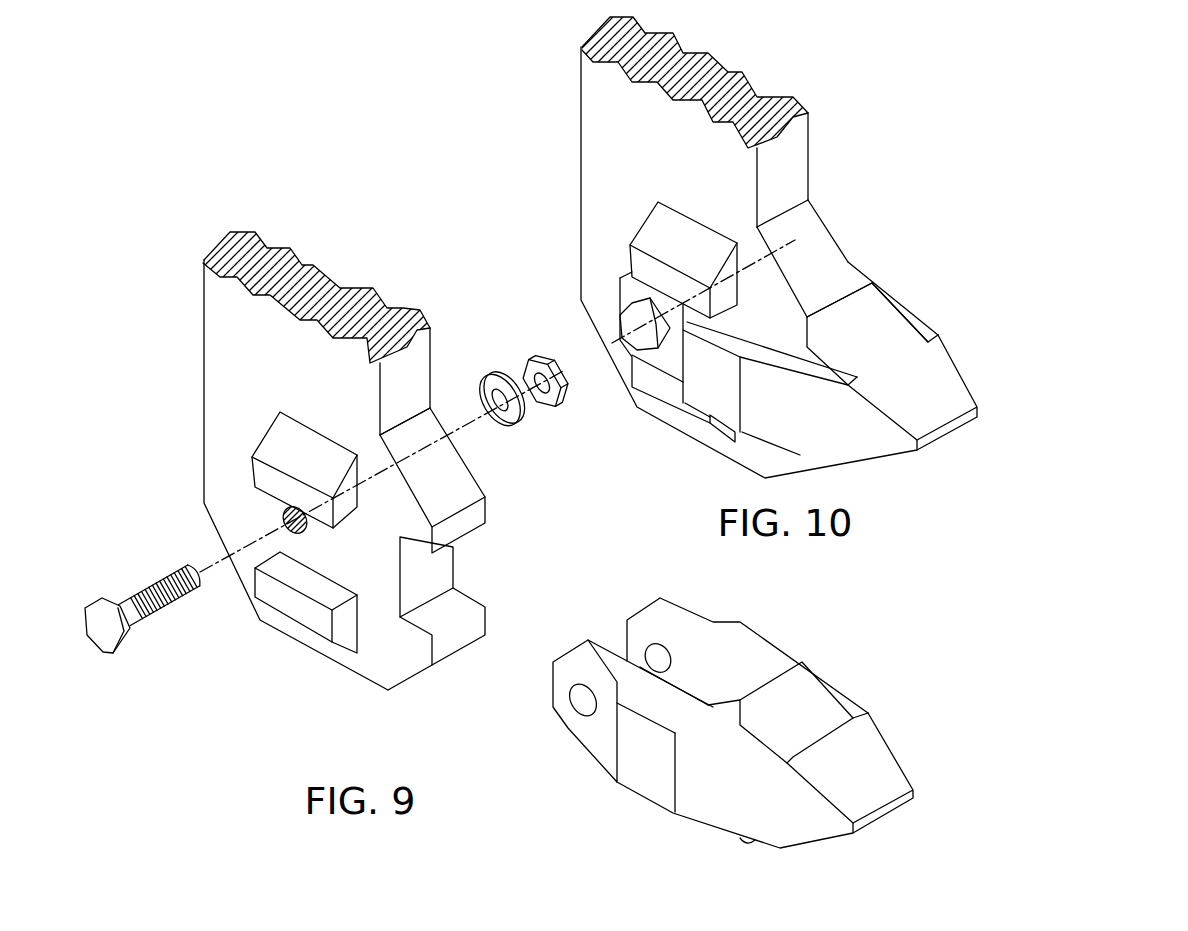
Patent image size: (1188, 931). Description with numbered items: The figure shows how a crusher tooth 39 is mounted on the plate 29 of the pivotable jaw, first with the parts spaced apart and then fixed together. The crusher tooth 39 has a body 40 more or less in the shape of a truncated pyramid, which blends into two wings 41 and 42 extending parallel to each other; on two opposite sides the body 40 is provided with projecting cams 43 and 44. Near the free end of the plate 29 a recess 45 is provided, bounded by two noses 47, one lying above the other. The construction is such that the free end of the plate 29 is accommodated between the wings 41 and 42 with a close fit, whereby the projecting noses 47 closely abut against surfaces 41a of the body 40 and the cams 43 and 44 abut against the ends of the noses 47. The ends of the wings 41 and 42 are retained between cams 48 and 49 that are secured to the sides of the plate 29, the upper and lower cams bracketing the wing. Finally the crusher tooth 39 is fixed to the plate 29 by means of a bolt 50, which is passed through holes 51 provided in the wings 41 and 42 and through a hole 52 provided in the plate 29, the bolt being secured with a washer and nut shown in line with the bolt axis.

In FIG. 9, the plate 29 is at (235, 320).
In FIG. 10, the plate 29 is at (605, 107).
In FIG. 9, the crusher tooth 39 is at (732, 724).
In FIG. 10, the crusher tooth 39 is at (918, 372).
In FIG. 9, the body 40 is at (722, 797).
In FIG. 10, the body 40 is at (925, 412).
In FIG. 9, the wing 41 is at (672, 613).
In FIG. 9, the surfaces of the body 41a is at (728, 707).
In FIG. 9, the wing 42 is at (588, 650).
In FIG. 10, the wing 42 is at (672, 355).
In FIG. 9, the projecting cam 43 is at (800, 713).
In FIG. 10, the projecting cam 43 is at (872, 327).
In FIG. 9, the projecting cam 44 is at (750, 843).
In FIG. 9, the recess 45 is at (462, 572).
In FIG. 9, the noses 47 is at (470, 512).
In FIG. 10, the noses 47 is at (818, 243).
In FIG. 9, the cam 48 is at (292, 442).
In FIG. 10, the cam 48 is at (663, 243).
In FIG. 9, the cam 49 is at (307, 607).
In FIG. 10, the cam 49 is at (703, 417).
In FIG. 9, the bolt 50 is at (97, 620).
In FIG. 9, the holes 51 is at (578, 700).
In FIG. 9, the hole 52 is at (285, 512).